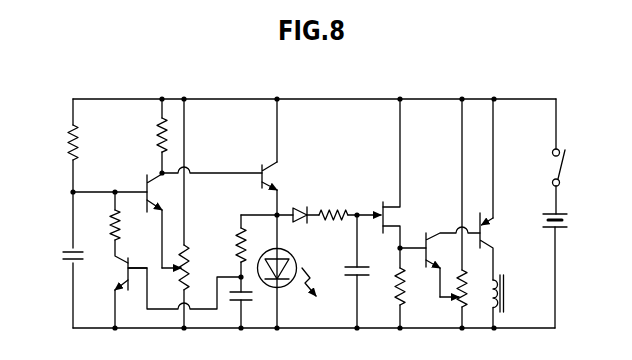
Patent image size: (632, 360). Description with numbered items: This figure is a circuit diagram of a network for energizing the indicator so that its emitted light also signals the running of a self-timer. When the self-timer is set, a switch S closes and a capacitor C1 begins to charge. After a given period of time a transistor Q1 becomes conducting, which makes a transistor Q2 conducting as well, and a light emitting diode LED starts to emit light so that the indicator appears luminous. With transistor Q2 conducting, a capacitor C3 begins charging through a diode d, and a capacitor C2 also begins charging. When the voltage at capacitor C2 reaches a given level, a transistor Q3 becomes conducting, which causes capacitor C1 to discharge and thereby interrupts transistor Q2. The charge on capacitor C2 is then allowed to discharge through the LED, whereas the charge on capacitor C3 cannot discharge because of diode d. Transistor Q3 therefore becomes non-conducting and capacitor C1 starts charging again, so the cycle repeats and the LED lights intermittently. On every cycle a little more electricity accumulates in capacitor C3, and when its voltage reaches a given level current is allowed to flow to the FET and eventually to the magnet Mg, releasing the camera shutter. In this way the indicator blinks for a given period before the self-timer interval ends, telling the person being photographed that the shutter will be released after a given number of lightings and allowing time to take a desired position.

The transistor Q1 is at (145, 180).
The transistor Q2 is at (262, 167).
The transistor Q3 is at (143, 249).
The capacitor C1 is at (65, 254).
The capacitor C2 is at (252, 295).
The capacitor C3 is at (369, 278).
The diode d is at (296, 207).
The light emitting diode LED is at (301, 241).
The field effect transistor FET is at (383, 203).
The magnet Mg is at (528, 271).
The switch S is at (563, 168).